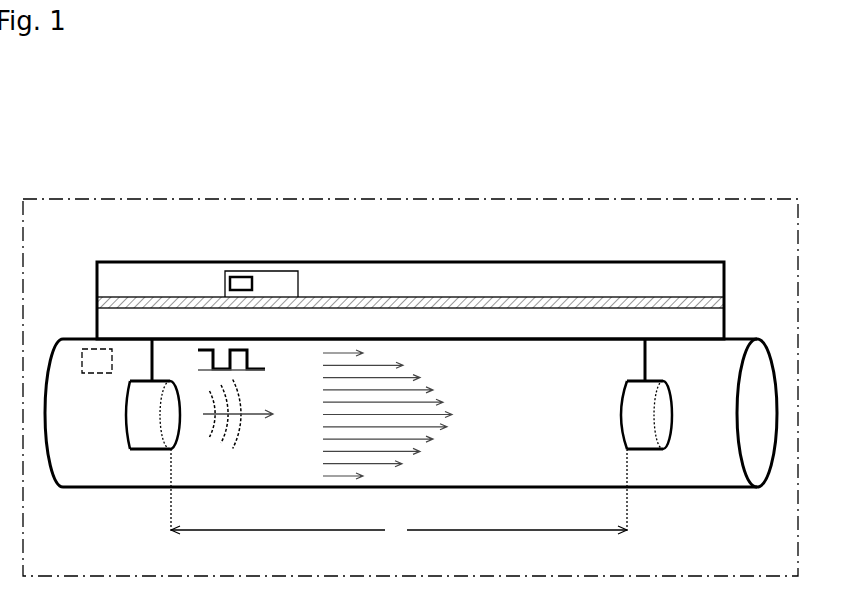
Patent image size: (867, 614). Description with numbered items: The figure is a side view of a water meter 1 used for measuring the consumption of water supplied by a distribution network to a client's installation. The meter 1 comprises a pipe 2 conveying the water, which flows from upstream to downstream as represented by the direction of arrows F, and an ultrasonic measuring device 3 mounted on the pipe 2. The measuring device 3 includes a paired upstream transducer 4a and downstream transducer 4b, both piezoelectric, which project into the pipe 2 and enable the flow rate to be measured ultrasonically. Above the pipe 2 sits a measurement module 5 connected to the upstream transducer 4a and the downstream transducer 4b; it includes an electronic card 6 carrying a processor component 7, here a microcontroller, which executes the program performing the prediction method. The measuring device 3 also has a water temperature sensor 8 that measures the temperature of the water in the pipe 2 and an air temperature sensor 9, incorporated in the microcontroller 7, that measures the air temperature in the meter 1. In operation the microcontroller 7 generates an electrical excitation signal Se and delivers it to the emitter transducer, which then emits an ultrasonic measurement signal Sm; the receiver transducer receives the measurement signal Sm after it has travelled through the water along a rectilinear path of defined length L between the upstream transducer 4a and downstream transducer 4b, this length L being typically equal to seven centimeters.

The water meter 1 is at (725, 199).
The pipe 2 is at (100, 488).
The ultrasonic measuring device 3 is at (460, 283).
The upstream transducer 4a is at (130, 430).
The downstream transducer 4b is at (672, 440).
The measurement module 5 is at (190, 262).
The electronic card 6 is at (146, 297).
The processor component 7 is at (283, 271).
The water temperature sensor 8 is at (85, 349).
The air temperature sensor 9 is at (240, 277).
The electrical excitation signal Se is at (249, 352).
The ultrasonic measurement signal Sm is at (233, 445).
The direction of water flow F is at (378, 427).
The defined length of path L is at (399, 494).